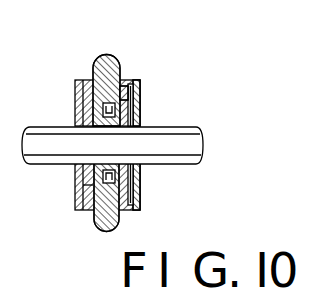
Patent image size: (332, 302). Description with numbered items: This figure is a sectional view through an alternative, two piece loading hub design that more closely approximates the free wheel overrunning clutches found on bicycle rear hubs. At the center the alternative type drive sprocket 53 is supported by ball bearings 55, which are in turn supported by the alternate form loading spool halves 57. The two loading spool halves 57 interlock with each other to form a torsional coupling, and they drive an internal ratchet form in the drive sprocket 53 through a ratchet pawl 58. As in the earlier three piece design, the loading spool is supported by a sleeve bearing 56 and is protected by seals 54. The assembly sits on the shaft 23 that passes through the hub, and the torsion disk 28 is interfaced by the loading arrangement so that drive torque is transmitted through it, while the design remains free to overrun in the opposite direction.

The rod 23 is at (184, 148).
The torsion disk 28 is at (75, 83).
The drive sprocket 53 is at (117, 57).
The seals 54 is at (128, 80).
The ball bearings 55 is at (131, 102).
The sleeve bearing 56 is at (137, 113).
The loading spool halves 57 is at (83, 185).
The ratchet pawl 58 is at (103, 103).